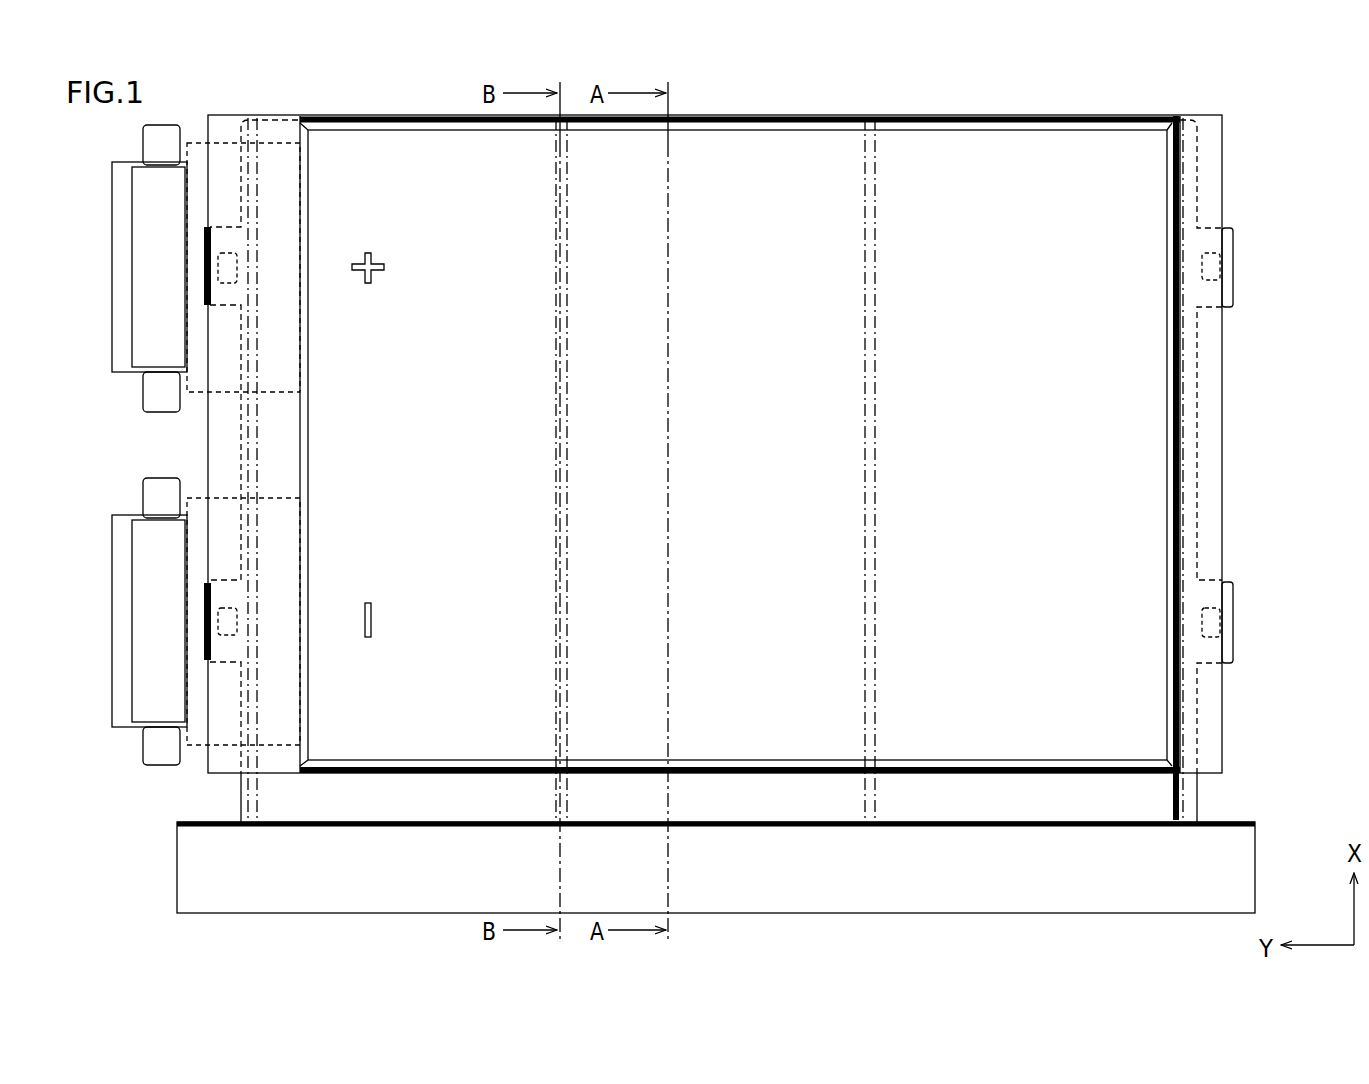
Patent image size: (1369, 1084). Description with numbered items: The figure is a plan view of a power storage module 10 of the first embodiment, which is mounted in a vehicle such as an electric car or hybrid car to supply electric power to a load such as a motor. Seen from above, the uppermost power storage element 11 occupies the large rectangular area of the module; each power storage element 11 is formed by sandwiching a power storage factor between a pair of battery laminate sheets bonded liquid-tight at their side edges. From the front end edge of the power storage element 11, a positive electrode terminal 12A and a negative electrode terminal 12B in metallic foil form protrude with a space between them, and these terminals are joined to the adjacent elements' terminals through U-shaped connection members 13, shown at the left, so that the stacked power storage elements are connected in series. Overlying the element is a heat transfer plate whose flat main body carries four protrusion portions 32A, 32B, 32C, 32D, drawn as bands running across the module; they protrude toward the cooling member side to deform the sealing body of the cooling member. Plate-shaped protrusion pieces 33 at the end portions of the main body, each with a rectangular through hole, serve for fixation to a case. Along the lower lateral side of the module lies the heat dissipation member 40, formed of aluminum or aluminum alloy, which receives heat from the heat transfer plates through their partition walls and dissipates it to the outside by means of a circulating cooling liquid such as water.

The power storage module 10 is at (126, 814).
The power storage element 11 is at (788, 168).
The positive electrode terminal 12A is at (150, 250).
The negative electrode terminal 12B is at (150, 627).
The connection member 13 is at (122, 334).
The protrusion portion 32A is at (251, 117).
The protrusion portion 32B is at (566, 147).
The protrusion portion 32C is at (870, 125).
The protrusion portion 32D is at (1182, 118).
The protrusion piece 33 is at (1225, 248).
The heat dissipation member 40 is at (1026, 882).